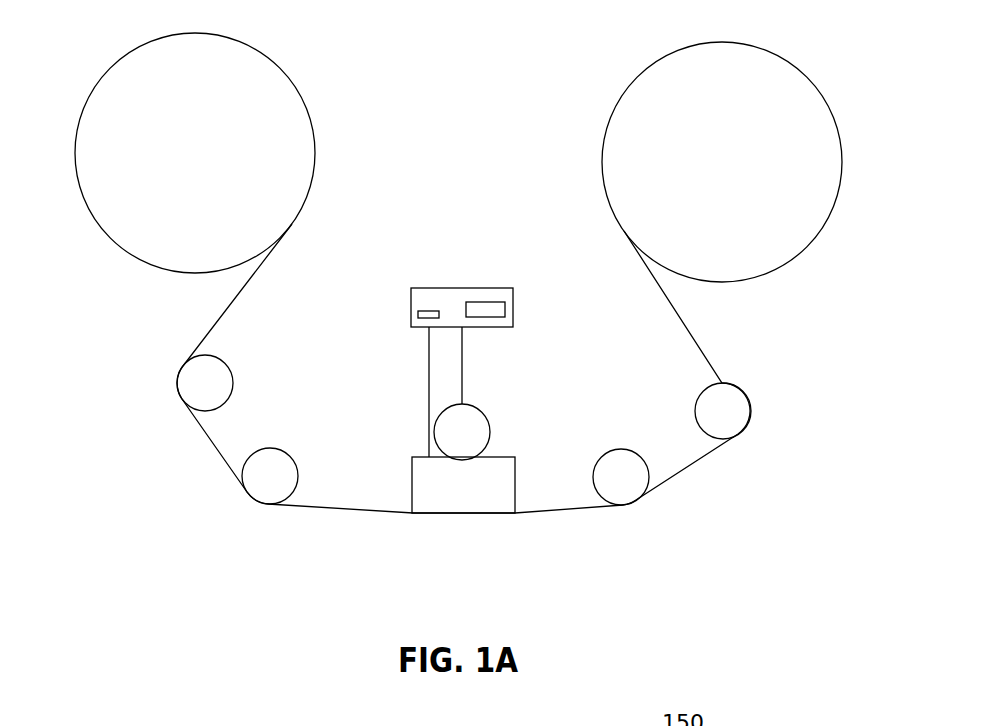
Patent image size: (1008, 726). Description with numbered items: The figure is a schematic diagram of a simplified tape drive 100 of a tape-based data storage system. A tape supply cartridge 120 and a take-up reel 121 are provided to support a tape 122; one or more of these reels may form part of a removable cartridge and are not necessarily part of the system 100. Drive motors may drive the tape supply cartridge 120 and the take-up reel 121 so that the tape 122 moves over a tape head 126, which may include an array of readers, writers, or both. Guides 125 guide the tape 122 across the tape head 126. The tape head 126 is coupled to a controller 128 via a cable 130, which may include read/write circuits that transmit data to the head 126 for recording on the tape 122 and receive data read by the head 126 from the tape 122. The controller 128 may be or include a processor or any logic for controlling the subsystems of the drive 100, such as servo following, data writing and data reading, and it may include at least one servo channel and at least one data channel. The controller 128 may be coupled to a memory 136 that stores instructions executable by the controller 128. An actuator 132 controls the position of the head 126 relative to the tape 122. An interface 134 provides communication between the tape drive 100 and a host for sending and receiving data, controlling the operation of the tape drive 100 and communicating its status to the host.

The tape drive 100 is at (156, 319).
The tape supply cartridge 120 is at (312, 127).
The take-up reel 121 is at (798, 258).
The tape 122 is at (343, 512).
The guides 125 is at (270, 448).
The tape head 126 is at (517, 483).
The controller 128 is at (460, 288).
The cable 130 is at (429, 428).
The actuator 132 is at (483, 408).
The interface 134 is at (494, 302).
The memory 136 is at (428, 311).